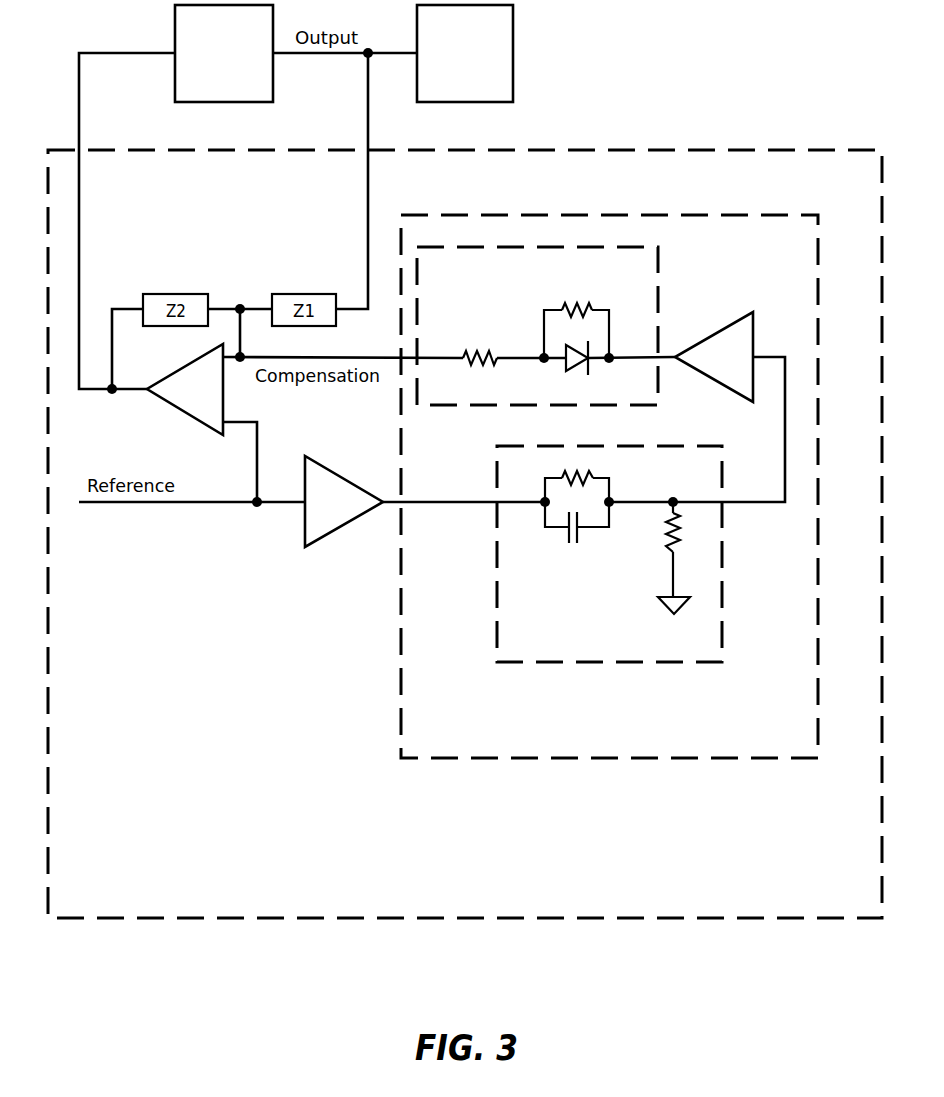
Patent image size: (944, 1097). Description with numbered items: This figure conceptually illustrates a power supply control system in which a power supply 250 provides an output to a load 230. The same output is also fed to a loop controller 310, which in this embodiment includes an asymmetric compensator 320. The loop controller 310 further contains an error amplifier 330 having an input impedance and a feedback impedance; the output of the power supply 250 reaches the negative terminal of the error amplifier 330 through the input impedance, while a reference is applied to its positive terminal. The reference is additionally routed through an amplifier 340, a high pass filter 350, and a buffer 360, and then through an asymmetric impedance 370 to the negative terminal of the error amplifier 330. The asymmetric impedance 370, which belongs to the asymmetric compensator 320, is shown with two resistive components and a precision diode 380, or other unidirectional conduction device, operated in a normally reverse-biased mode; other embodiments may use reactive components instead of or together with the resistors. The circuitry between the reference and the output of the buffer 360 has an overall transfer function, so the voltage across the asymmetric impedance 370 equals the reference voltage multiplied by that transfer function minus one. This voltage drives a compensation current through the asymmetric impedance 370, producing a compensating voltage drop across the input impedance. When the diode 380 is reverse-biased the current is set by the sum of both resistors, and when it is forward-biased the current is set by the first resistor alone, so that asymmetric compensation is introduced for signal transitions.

The power supply 250 is at (224, 53).
The load 230 is at (465, 53).
The loop controller 310 is at (465, 534).
The asymmetric compensator 320 is at (609, 486).
The error amplifier 330 is at (140, 397).
The amplifier 340 is at (318, 540).
The high pass filter 350 is at (609, 554).
The buffer 360 is at (733, 326).
The asymmetric impedance 370 is at (537, 326).
The precision diode 380 is at (607, 368).